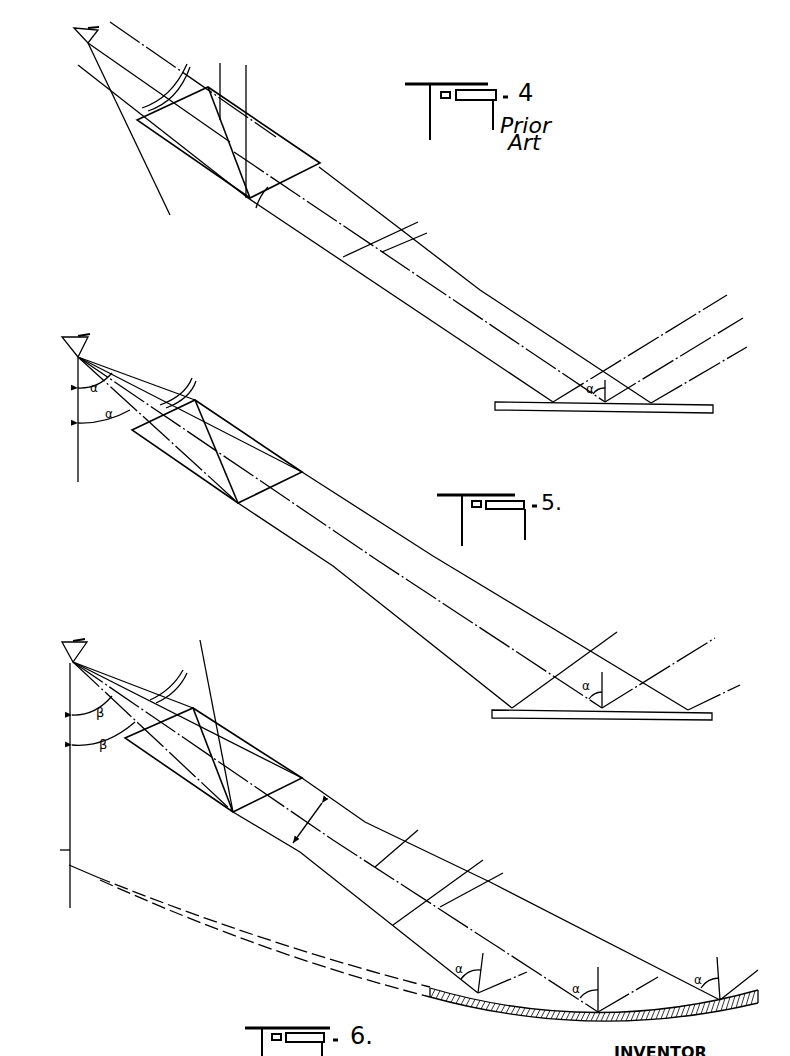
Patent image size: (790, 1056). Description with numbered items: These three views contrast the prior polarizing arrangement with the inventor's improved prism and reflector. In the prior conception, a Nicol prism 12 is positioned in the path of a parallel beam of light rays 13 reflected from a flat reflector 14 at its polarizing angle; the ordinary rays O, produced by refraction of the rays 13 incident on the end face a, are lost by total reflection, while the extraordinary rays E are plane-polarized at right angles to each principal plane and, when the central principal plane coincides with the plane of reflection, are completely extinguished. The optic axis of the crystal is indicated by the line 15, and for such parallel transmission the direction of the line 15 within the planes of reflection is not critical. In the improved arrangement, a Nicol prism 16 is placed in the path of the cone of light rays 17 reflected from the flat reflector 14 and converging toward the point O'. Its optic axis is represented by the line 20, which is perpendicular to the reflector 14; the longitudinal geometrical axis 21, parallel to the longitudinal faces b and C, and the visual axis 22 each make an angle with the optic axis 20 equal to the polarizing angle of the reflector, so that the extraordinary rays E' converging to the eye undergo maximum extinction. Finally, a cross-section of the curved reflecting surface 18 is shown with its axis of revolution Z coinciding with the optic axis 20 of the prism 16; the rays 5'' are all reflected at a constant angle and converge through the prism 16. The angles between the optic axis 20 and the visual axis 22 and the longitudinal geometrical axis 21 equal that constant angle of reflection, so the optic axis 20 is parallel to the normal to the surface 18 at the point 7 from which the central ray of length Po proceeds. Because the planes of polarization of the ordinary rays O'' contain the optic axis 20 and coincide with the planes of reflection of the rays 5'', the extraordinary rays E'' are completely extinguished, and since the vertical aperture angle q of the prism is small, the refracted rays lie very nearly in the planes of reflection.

In FIG. 4, the Nicol prism 12 is at (194, 152).
In FIG. 4, the parallel beam of light rays 13 is at (442, 277).
In FIG. 4, the flat reflector 14 is at (712, 405).
In FIG. 5, the flat reflector 14 is at (712, 716).
In FIG. 4, the optic axis 15 is at (150, 181).
In FIG. 5, the Nicol prism 16 is at (200, 473).
In FIG. 6, the Nicol prism 16 is at (197, 787).
In FIG. 5, the cone of light rays 17 is at (540, 621).
In FIG. 6, the reflecting surface 18 is at (673, 1008).
In FIG. 5, the optic axis 20 is at (79, 468).
In FIG. 6, the optic axis 20 is at (70, 786).
In FIG. 5, the longitudinal geometrical axis 21 is at (187, 431).
In FIG. 6, the longitudinal geometrical axis 21 is at (150, 733).
In FIG. 5, the visual axis 22 is at (180, 399).
In FIG. 6, the visual axis 22 is at (155, 706).
In FIG. 6, the point on reflecting surface 7 is at (602, 1010).
In FIG. 4, the ordinary rays O is at (251, 130).
In FIG. 5, the convergence point O' is at (55, 379).
In FIG. 6, the ordinary rays O'' is at (246, 726).
In FIG. 4, the extraordinary rays E is at (166, 77).
In FIG. 5, the extraordinary rays E' is at (178, 385).
In FIG. 6, the extraordinary rays E'' is at (168, 677).
In FIG. 4, the end face a is at (261, 208).
In FIG. 6, the end face a is at (62, 670).
In FIG. 5, the longitudinal face b is at (233, 503).
In FIG. 5, the longitudinal face C is at (262, 443).
In FIG. 6, the axis of revolution Z is at (60, 850).
In FIG. 6, the vertical aperture angle q is at (307, 823).
In FIG. 6, the central ray length Po is at (407, 841).
In FIG. 6, the reflected rays 5'' is at (454, 886).